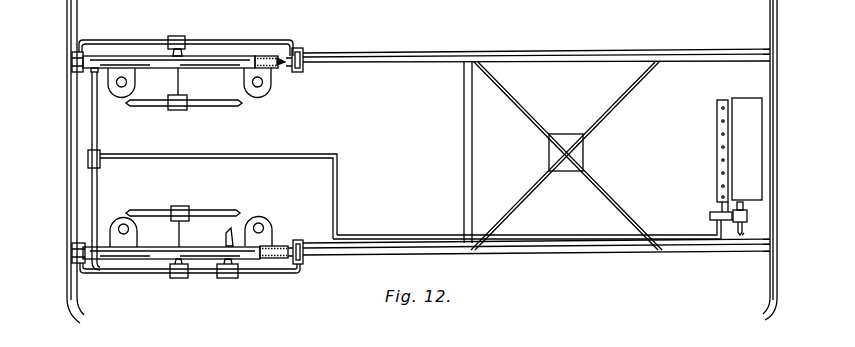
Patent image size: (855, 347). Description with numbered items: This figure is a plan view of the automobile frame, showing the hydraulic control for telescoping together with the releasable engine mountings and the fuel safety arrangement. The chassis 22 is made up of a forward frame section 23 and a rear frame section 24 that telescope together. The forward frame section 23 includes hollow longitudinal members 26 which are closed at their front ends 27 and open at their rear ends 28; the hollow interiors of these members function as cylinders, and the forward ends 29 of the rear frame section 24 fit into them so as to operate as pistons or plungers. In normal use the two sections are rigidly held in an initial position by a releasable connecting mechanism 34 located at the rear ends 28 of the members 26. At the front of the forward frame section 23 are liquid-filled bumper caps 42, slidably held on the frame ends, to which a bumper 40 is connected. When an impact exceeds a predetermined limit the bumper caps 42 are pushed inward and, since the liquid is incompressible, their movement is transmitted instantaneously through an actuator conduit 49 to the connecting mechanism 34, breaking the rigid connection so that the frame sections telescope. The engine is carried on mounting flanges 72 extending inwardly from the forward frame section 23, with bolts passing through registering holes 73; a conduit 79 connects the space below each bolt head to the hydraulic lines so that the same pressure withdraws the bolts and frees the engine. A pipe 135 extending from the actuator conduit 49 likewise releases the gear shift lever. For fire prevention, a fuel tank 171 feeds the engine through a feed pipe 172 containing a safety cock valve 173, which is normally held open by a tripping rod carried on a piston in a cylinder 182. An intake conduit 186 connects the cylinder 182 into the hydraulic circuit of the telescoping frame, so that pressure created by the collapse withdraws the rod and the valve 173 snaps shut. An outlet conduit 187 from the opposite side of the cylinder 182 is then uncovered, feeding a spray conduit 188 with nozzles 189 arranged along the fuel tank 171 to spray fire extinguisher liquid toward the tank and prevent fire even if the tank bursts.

The chassis 22 is at (408, 50).
The forward frame section 23 is at (204, 53).
The rear frame section 24 is at (541, 56).
The hollow longitudinal members 26 is at (258, 55).
The front ends 27 is at (95, 55).
The rear ends 28 is at (288, 244).
The forward ends 29 is at (279, 59).
The releasable connecting mechanism 34 is at (304, 50).
The bumper 40 is at (66, 157).
The bumper caps 42 is at (72, 63).
The actuator conduit 49 is at (146, 40).
The mounting flanges 72 is at (263, 86).
The registering holes 73 is at (118, 88).
The conduit 79 is at (222, 107).
The pipe 135 is at (236, 226).
The fuel tank 171 is at (748, 107).
The feed pipe 172 is at (745, 234).
The safety cock valve 173 is at (744, 214).
The cylinder 182 is at (710, 217).
The intake conduit 186 is at (712, 242).
The outlet conduit 187 is at (722, 208).
The spray conduit 188 is at (717, 143).
The nozzles 189 is at (717, 124).